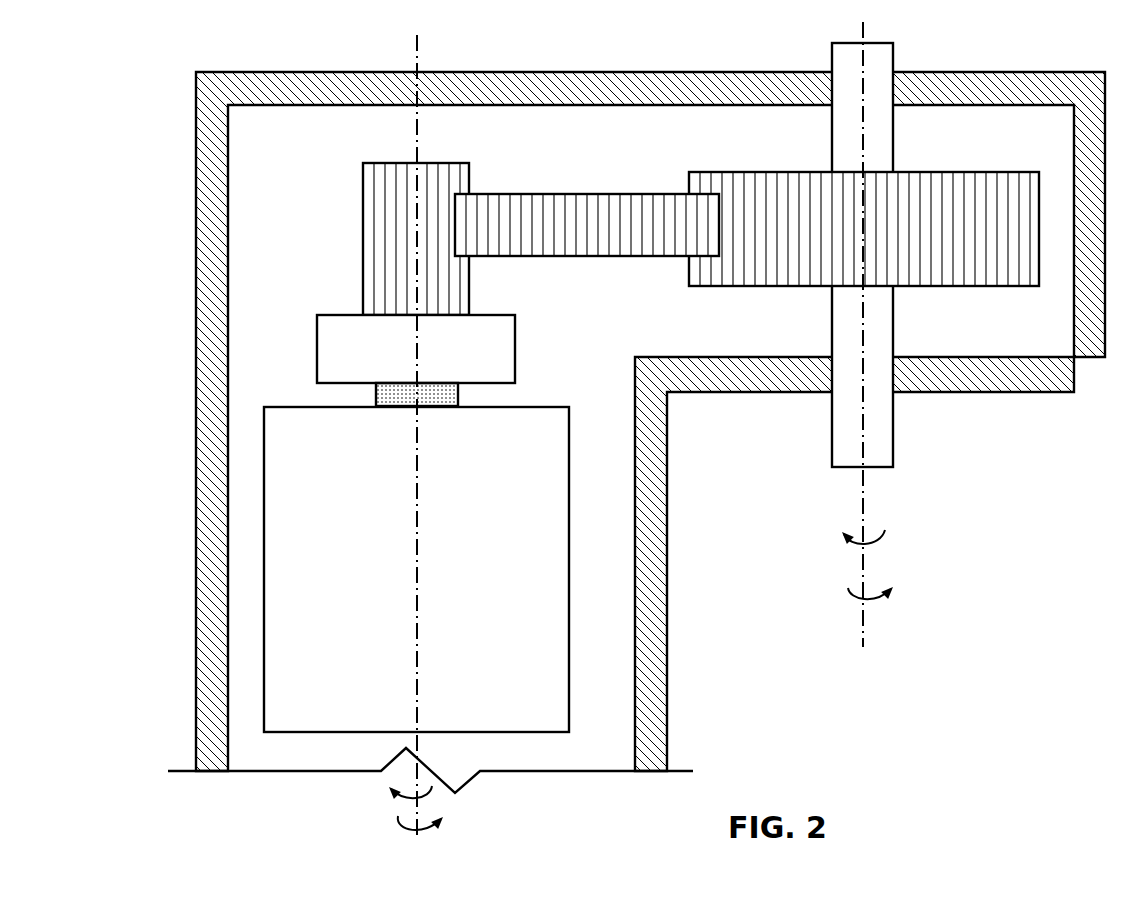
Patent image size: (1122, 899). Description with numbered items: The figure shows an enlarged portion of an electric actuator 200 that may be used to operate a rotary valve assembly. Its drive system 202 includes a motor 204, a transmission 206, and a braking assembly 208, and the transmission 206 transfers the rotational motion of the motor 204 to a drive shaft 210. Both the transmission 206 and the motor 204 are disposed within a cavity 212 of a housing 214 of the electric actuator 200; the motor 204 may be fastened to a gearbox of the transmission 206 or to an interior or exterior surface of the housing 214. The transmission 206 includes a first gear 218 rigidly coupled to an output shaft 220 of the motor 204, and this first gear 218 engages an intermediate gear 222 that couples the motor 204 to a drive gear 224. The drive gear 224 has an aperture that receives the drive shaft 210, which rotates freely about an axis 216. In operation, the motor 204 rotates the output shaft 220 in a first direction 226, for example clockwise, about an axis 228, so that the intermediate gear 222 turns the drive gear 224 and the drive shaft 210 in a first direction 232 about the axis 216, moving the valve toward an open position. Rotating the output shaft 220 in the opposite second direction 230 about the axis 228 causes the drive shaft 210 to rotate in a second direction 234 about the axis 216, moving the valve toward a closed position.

The electric actuator 200 is at (591, 428).
The drive system 202 is at (612, 404).
The motor 204 is at (568, 604).
The transmission 206 is at (701, 216).
The braking assembly 208 is at (515, 340).
The drive shaft 210 is at (880, 50).
The cavity 212 is at (612, 421).
The housing 214 is at (197, 685).
The axis 216 is at (865, 638).
The first gear 218 is at (433, 163).
The output shaft 220 is at (376, 398).
The intermediate gear 222 is at (610, 194).
The drive gear 224 is at (747, 172).
The first direction 226 is at (428, 795).
The axis 228 is at (420, 48).
The second direction 230 is at (398, 822).
The first direction 232 is at (873, 545).
The second direction 234 is at (848, 588).